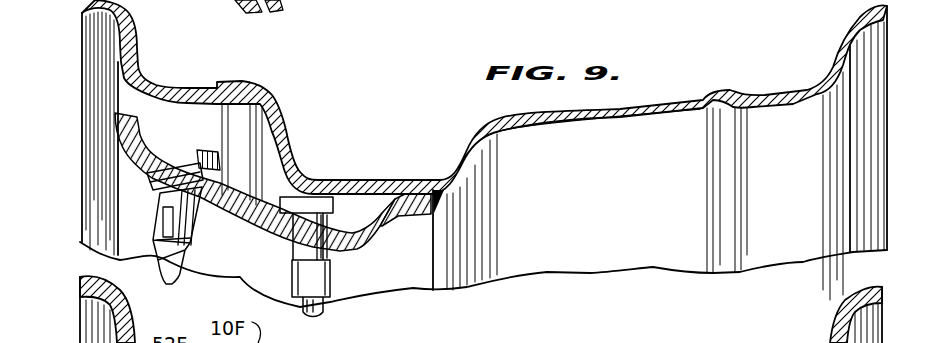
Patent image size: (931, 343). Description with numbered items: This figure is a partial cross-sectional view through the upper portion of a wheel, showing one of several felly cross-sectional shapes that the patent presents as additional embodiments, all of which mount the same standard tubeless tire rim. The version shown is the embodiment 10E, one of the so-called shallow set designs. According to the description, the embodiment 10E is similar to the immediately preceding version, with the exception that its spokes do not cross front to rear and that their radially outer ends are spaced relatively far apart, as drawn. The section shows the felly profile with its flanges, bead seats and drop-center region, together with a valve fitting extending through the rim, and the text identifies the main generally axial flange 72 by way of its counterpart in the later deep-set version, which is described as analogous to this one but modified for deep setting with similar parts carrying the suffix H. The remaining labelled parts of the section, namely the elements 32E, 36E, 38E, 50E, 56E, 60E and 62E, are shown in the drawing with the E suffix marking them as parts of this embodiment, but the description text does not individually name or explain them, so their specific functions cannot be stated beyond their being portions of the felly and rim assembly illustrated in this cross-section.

The wheel embodiment 10E is at (188, 55).
The drop center well 32E is at (356, 206).
The rim base 36E is at (80, 241).
The valve stem 38E is at (325, 312).
The bead seat 50E is at (412, 196).
The bead seat band 56E is at (395, 220).
The side ring 60E is at (114, 121).
The seal member 62E is at (147, 181).
The main generally axial flange 72 is at (233, 212).